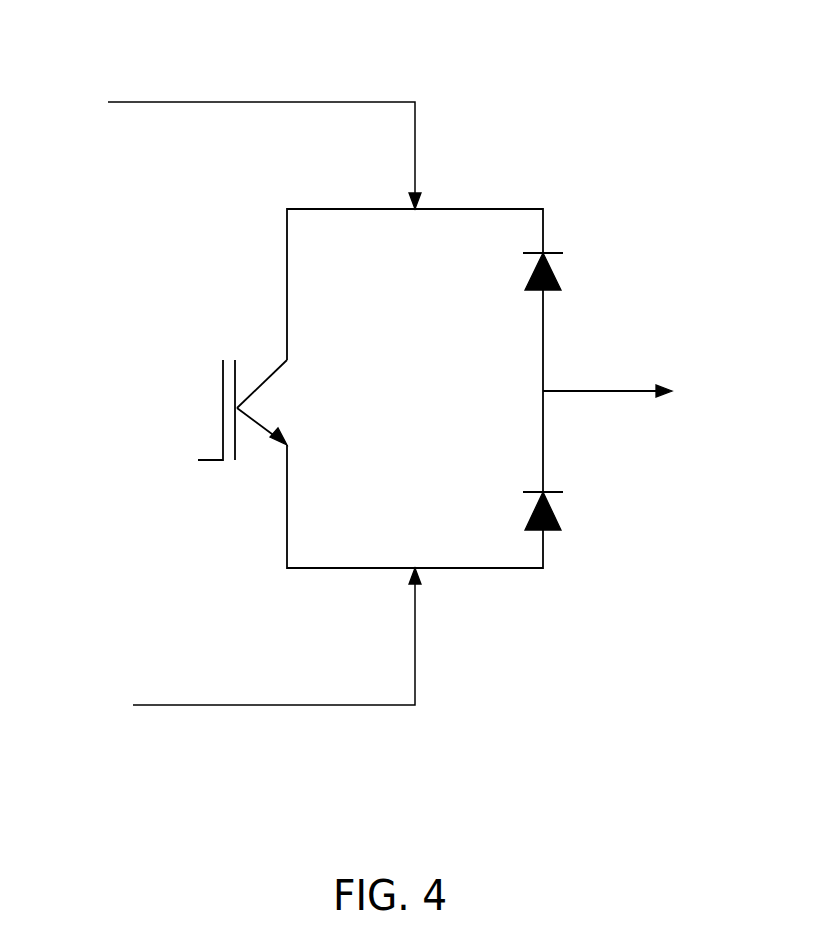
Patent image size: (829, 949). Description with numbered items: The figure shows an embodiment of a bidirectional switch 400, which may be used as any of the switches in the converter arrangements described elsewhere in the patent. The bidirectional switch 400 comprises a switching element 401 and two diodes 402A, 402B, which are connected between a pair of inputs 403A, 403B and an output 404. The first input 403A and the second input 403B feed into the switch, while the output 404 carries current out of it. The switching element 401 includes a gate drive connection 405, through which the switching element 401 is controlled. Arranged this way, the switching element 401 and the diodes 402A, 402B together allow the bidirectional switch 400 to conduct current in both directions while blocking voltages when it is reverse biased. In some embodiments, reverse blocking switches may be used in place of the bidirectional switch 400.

The bidirectional switch 400 is at (88, 25).
The switching element 401 is at (275, 403).
The diode 402A is at (520, 265).
The diode 402B is at (530, 508).
The input 403A is at (104, 111).
The input 403B is at (130, 715).
The output 404 is at (706, 400).
The gate drive connection 405 is at (198, 469).